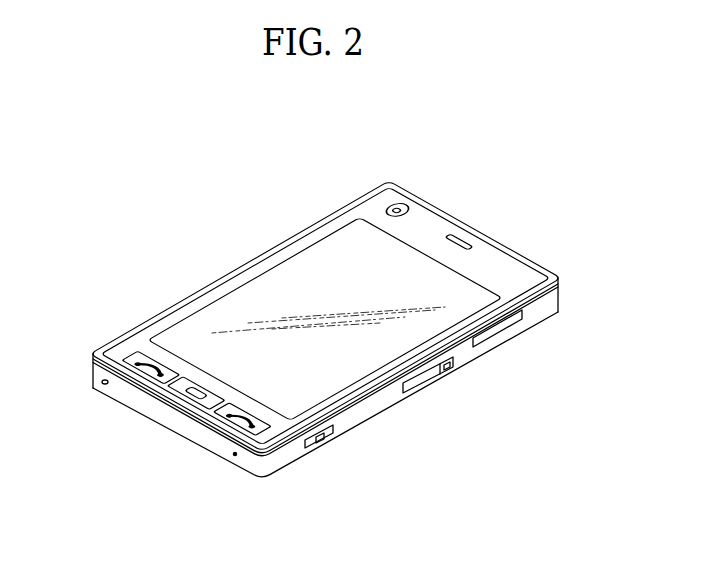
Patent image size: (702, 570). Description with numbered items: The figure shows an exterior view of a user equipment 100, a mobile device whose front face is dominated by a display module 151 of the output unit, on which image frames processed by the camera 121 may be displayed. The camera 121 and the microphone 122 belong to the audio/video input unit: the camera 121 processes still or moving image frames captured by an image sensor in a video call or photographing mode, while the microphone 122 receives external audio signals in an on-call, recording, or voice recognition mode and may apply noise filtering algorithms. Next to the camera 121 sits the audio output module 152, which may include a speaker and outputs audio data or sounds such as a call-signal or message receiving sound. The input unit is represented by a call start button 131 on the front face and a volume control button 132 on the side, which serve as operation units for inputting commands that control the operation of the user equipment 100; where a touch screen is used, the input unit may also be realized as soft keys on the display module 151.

The user equipment 100 is at (238, 224).
The camera 121 is at (396, 208).
The microphone 122 is at (235, 457).
The call start button 131 is at (133, 363).
The volume control button 132 is at (417, 380).
The display module 151 is at (228, 303).
The audio output module 152 is at (462, 238).